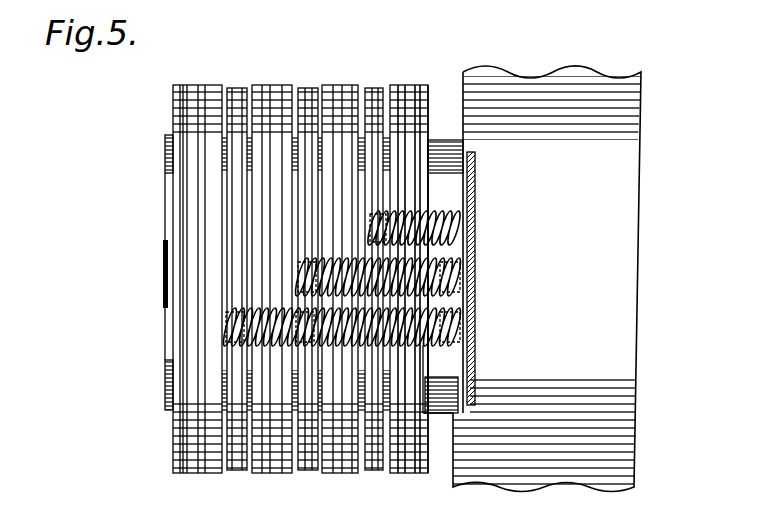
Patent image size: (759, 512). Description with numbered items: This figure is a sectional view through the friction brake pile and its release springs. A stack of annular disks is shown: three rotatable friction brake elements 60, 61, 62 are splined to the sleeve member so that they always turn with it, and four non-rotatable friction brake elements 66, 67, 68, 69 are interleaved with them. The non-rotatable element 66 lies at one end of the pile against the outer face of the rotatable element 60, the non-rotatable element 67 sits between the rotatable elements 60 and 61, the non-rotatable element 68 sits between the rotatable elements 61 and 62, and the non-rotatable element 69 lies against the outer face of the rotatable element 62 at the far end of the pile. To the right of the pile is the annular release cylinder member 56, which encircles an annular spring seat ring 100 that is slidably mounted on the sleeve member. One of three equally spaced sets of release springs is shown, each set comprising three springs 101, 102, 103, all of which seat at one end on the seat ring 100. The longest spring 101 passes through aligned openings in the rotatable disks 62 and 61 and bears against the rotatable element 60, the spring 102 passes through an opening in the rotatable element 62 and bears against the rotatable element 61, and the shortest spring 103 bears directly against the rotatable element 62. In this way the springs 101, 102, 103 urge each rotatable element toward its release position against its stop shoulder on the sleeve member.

The annular release cylinder member 56 is at (479, 80).
The non-rotatable friction brake element 66 is at (207, 85).
The rotatable friction brake element 60 is at (233, 98).
The non-rotatable friction brake element 67 is at (257, 90).
The rotatable friction brake element 61 is at (303, 100).
The non-rotatable friction brake element 68 is at (355, 74).
The rotatable friction brake element 62 is at (372, 100).
The non-rotatable friction brake element 69 is at (402, 93).
The annular spring seat ring 100 is at (465, 255).
The release spring 101 is at (433, 342).
The release spring 102 is at (432, 297).
The release spring 103 is at (442, 226).